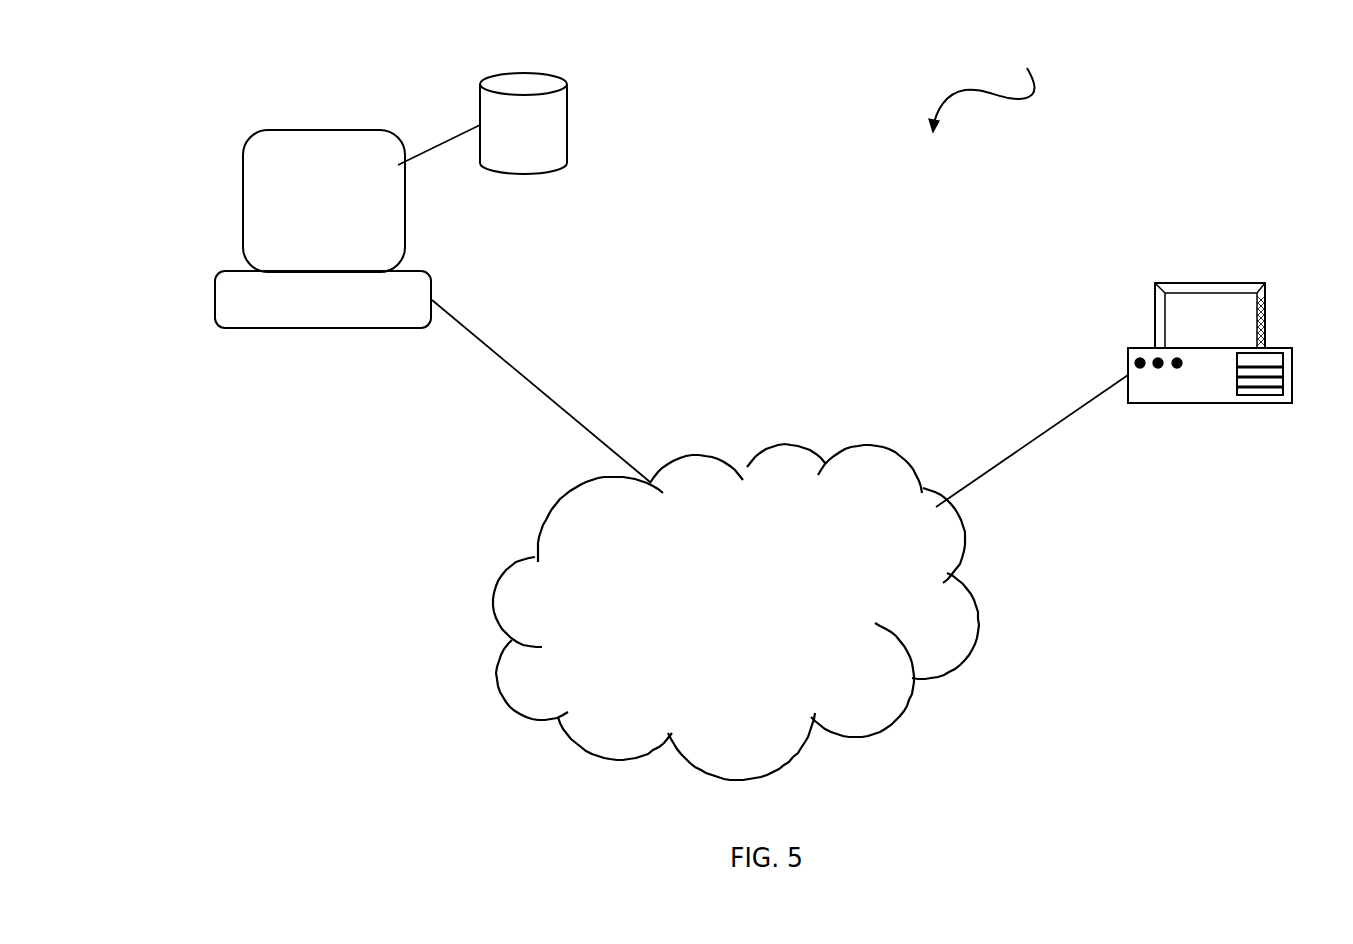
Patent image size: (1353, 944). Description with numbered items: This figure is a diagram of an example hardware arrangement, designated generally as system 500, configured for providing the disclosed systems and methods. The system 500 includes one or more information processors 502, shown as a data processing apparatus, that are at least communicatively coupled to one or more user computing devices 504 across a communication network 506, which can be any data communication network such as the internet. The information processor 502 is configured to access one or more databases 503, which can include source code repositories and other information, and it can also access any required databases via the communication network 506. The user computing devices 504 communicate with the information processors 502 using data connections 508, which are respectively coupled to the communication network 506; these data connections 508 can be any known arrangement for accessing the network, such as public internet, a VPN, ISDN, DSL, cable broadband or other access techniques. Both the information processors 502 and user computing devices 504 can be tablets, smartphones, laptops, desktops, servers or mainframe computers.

The system 500 is at (988, 79).
The information processor 502 is at (228, 268).
The database 503 is at (480, 110).
The user computing device 504 is at (1155, 312).
The communication network 506 is at (510, 562).
The data connection 508 is at (597, 443).